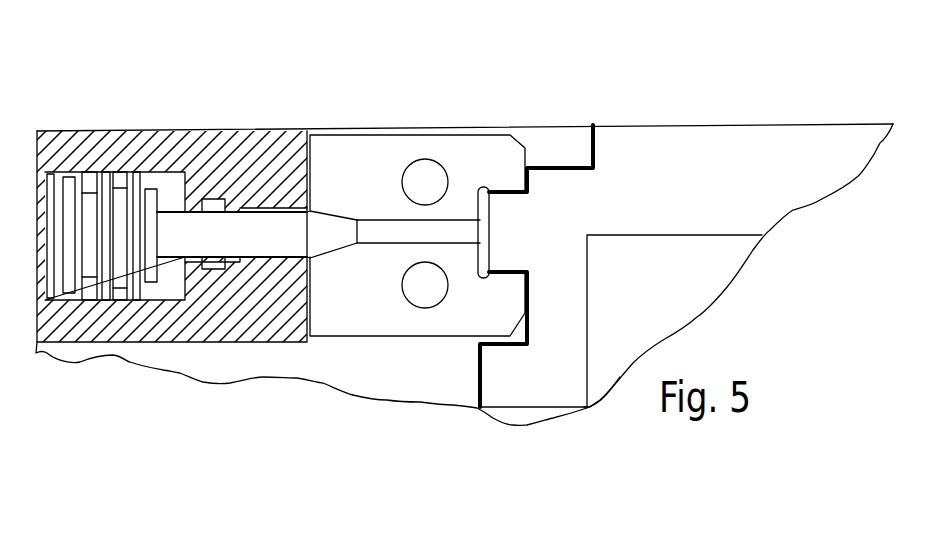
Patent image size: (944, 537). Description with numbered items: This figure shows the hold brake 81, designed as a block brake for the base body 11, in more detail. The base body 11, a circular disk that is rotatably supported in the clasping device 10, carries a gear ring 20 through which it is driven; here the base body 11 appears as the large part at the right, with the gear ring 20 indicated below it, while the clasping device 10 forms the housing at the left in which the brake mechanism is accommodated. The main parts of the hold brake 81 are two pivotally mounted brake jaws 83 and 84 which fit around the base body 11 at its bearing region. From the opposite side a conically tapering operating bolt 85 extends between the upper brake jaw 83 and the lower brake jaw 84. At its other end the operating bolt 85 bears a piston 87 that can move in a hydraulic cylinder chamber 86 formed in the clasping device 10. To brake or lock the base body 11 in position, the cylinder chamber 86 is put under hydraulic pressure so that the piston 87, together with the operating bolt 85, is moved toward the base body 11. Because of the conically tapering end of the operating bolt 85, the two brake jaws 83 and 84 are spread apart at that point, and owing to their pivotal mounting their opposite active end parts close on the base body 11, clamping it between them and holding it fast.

The clasping device 10 is at (178, 358).
The base body 11 is at (661, 148).
The gear ring 20 is at (517, 387).
The hold brake 81 is at (348, 124).
The brake jaw 83 is at (390, 152).
The brake jaw 84 is at (357, 332).
The operating bolt 85 is at (237, 218).
The hydraulic cylinder chamber 86 is at (93, 292).
The piston 87 is at (120, 192).